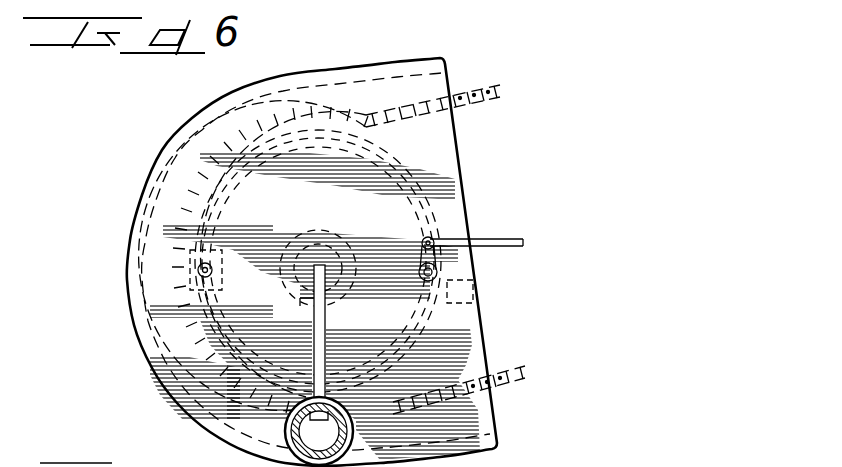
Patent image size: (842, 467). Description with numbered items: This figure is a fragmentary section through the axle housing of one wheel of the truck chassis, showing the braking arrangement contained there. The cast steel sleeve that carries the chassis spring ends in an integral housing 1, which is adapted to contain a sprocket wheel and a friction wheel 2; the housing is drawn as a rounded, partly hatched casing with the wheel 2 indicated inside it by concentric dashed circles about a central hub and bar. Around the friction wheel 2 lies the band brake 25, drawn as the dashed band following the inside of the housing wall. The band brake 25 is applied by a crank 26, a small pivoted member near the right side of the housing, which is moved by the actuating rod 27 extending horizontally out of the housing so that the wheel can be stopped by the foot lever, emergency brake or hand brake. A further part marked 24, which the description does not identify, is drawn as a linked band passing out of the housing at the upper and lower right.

The housing 1 is at (443, 161).
The friction wheel 2 is at (68, 237).
The chain 24 is at (505, 92).
The band brake 25 is at (100, 378).
The crank 26 is at (430, 253).
The actuating rod 27 is at (500, 242).